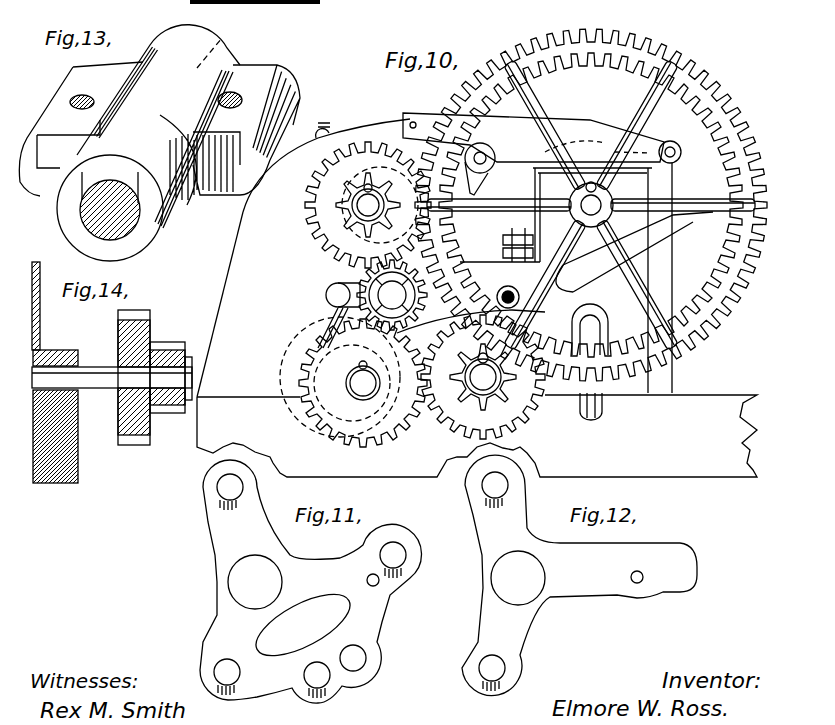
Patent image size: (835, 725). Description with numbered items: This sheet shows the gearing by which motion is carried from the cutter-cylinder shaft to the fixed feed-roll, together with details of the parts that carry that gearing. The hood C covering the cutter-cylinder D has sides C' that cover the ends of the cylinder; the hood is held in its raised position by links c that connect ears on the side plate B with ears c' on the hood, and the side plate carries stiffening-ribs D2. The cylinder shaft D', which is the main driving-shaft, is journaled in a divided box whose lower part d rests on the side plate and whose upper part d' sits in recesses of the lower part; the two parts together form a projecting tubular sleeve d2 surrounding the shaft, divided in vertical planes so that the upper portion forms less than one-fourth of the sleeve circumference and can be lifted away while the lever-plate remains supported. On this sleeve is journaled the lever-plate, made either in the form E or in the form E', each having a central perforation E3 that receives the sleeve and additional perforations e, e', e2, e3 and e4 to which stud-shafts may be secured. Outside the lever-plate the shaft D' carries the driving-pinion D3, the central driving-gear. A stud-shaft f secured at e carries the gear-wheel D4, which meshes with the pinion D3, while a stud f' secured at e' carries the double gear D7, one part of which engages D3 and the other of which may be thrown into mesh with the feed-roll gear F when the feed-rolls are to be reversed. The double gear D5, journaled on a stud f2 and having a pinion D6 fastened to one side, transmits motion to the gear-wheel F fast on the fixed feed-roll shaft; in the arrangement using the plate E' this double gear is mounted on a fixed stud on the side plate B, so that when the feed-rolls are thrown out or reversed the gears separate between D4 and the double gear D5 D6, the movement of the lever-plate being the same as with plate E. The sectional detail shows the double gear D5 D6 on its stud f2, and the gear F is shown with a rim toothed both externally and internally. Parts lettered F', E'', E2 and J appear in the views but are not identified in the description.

In FIG. 10, the feed-roll gear-wheel F is at (591, 205).
In FIG. 10, the hub of wheel F F' is at (591, 204).
In FIG. 11, the lever-plate E is at (310, 581).
In FIG. 10, the lever-plate E' is at (471, 280).
In FIG. 12, the lever-plate E' is at (579, 575).
In FIG. 10, the pivot of lever c E'' is at (659, 136).
In FIG. 10, the arm E2 is at (634, 252).
In FIG. 11, the perforation E3 is at (245, 580).
In FIG. 12, the perforation E3 is at (518, 578).
In FIG. 11, the perforation e is at (230, 674).
In FIG. 12, the perforation e is at (492, 673).
In FIG. 11, the perforation e' is at (230, 492).
In FIG. 12, the perforation e' is at (495, 490).
In FIG. 11, the perforation e2 is at (355, 658).
In FIG. 11, the perforation e3 is at (396, 562).
In FIG. 11, the perforation e4 is at (317, 675).
In FIG. 10, the side plate B is at (493, 169).
In FIG. 14, the side plate B is at (40, 345).
In FIG. 10, the hood C is at (326, 165).
In FIG. 10, the hood sides C' is at (231, 304).
In FIG. 10, the links c is at (542, 138).
In FIG. 10, the ears c' is at (330, 127).
In FIG. 10, the cutter-cylinder D is at (483, 377).
In FIG. 10, the cutter-cylinder shaft D' is at (392, 295).
In FIG. 10, the stiffening-ribs D2 is at (313, 124).
In FIG. 10, the driving-pinion D3 is at (350, 280).
In FIG. 10, the gear-wheel D4 is at (325, 372).
In FIG. 10, the double gear D5 is at (485, 380).
In FIG. 14, the double gear D5 is at (168, 346).
In FIG. 14, the pinion D6 is at (143, 316).
In FIG. 10, the double gear D7 is at (343, 188).
In FIG. 10, the stud-shaft f is at (363, 380).
In FIG. 10, the stud f' is at (368, 202).
In FIG. 10, the stud f2 is at (483, 374).
In FIG. 14, the stud f2 is at (107, 392).
In FIG. 13, the lower box part d is at (231, 165).
In FIG. 13, the upper box part d' is at (159, 129).
In FIG. 13, the tubular stud or sleeve d2 is at (148, 143).
In FIG. 10, the hook J is at (600, 333).